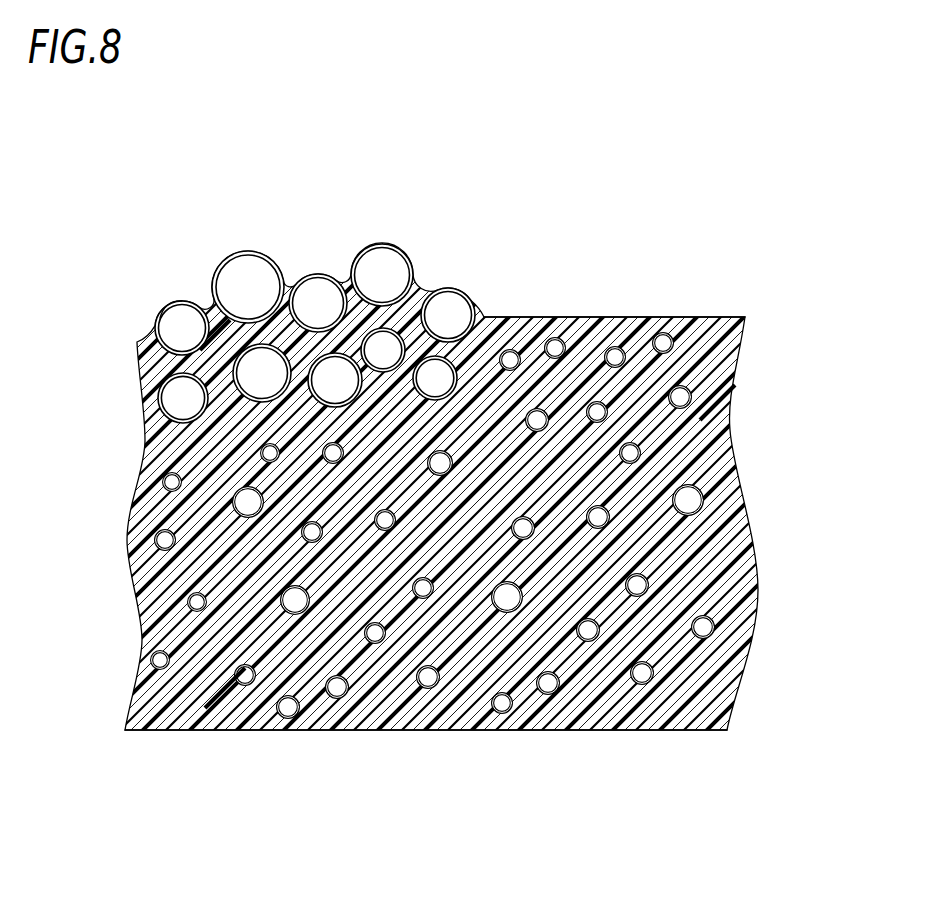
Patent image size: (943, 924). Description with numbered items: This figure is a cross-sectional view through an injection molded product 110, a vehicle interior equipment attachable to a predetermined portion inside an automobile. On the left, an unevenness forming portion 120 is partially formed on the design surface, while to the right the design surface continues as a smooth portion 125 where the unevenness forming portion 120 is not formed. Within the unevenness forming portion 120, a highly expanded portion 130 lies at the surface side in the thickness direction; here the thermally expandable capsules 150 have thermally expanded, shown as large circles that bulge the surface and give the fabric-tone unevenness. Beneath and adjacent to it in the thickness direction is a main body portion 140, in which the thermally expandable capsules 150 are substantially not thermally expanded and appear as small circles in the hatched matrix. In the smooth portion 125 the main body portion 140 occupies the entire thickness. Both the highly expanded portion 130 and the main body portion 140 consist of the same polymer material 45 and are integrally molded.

The injection molded product 110 is at (678, 198).
The unevenness forming portion 120 is at (297, 240).
The smooth portion 125 is at (558, 297).
The highly expanded portion 130 is at (116, 243).
The main body portion 140 is at (116, 430).
The polymer material 45 is at (220, 340).
The thermally expandable capsules 150 is at (414, 262).